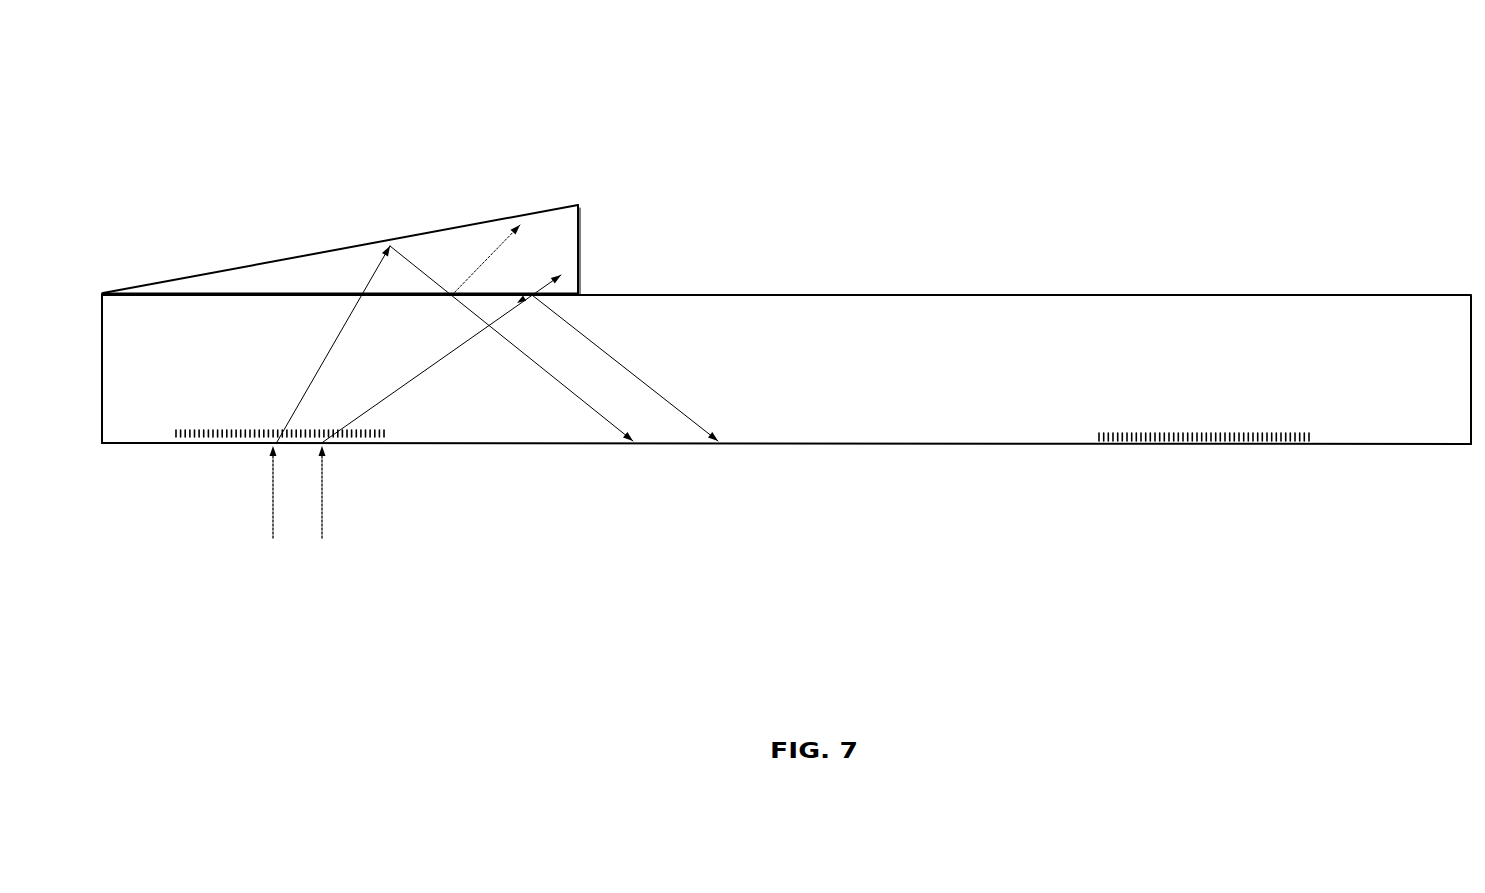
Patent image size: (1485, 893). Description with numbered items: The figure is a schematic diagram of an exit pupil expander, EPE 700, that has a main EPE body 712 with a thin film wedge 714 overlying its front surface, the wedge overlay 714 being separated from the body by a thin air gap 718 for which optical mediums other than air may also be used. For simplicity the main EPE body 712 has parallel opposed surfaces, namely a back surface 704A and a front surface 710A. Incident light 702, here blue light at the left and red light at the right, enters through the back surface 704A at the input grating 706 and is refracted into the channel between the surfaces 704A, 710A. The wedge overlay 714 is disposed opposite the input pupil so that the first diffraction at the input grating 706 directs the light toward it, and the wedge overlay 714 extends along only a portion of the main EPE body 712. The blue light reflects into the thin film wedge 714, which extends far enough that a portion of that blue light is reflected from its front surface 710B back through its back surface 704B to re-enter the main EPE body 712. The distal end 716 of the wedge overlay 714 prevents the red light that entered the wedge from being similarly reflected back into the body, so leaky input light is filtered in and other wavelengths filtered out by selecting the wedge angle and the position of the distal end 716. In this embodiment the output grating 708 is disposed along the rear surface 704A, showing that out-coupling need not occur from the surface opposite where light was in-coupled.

The EPE 700 is at (959, 139).
The incident light 702 is at (338, 504).
The back surface 704A is at (825, 439).
The back surface 704B is at (331, 279).
The input grating 706 is at (195, 452).
The output grating 708 is at (1232, 452).
The front surface 710A is at (825, 302).
The front surface 710B is at (430, 226).
The main EPE body 712 is at (1230, 293).
The thin film wedge 714 is at (465, 250).
The distal end 716 is at (585, 240).
The air gap 718 is at (595, 272).